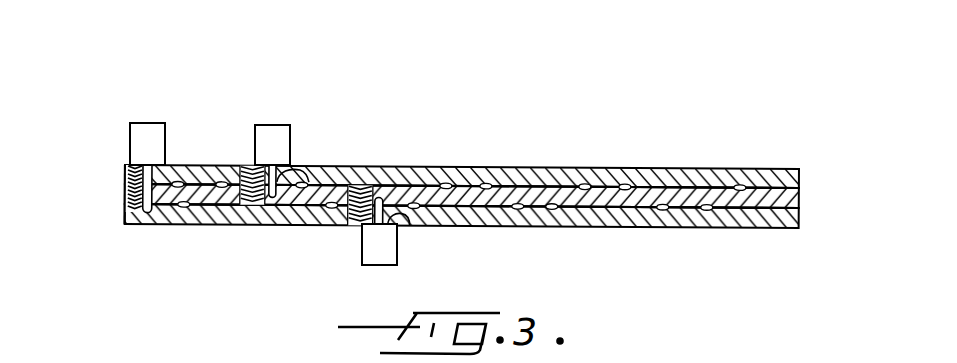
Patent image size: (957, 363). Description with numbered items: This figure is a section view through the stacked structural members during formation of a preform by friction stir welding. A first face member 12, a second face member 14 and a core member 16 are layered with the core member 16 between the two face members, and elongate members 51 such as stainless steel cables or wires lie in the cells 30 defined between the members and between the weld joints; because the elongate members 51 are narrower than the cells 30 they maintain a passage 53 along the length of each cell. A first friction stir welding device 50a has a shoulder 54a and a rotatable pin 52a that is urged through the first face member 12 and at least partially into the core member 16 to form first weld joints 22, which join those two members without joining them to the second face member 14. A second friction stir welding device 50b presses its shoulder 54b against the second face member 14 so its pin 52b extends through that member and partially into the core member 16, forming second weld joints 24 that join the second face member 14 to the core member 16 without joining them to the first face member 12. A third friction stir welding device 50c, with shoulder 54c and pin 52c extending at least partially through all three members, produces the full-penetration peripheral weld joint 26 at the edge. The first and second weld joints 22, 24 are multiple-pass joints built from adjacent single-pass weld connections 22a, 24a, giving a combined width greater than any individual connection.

The first face member 12 is at (780, 168).
The second face member 14 is at (783, 223).
The core member 16 is at (792, 195).
The first weld joint 22 is at (243, 163).
The single-pass weld connection 22a is at (256, 206).
The second weld joint 24 is at (360, 185).
The single-pass weld connection 24a is at (352, 216).
The peripheral weld joint 26 is at (125, 189).
The cell 30 is at (670, 185).
The first friction stir welding device 50a is at (273, 122).
The second friction stir welding device 50b is at (364, 268).
The third friction stir welding device 50c is at (145, 122).
The elongate member 51 is at (223, 182).
The pin 52a is at (272, 198).
The pin 52b is at (380, 197).
The pin 52c is at (151, 216).
The passage 53 is at (585, 207).
The shoulder 54a is at (302, 168).
The shoulder 54b is at (402, 223).
The shoulder 54c is at (127, 170).